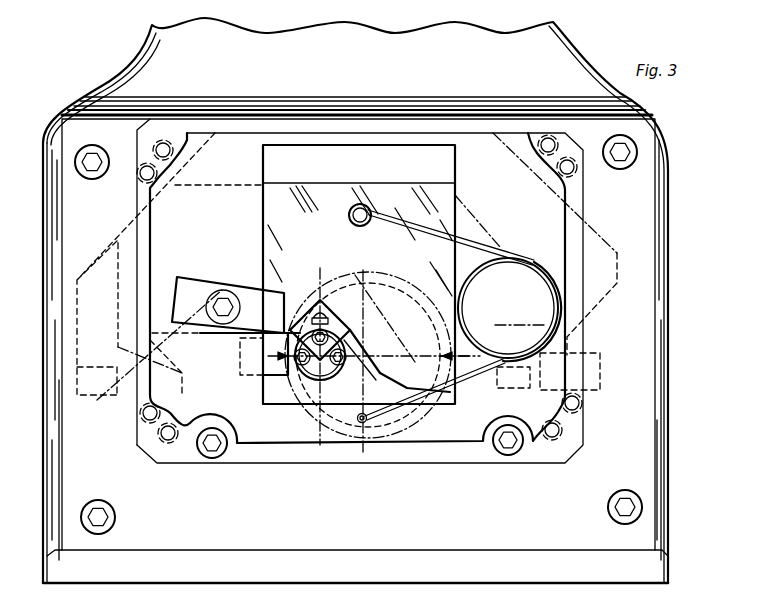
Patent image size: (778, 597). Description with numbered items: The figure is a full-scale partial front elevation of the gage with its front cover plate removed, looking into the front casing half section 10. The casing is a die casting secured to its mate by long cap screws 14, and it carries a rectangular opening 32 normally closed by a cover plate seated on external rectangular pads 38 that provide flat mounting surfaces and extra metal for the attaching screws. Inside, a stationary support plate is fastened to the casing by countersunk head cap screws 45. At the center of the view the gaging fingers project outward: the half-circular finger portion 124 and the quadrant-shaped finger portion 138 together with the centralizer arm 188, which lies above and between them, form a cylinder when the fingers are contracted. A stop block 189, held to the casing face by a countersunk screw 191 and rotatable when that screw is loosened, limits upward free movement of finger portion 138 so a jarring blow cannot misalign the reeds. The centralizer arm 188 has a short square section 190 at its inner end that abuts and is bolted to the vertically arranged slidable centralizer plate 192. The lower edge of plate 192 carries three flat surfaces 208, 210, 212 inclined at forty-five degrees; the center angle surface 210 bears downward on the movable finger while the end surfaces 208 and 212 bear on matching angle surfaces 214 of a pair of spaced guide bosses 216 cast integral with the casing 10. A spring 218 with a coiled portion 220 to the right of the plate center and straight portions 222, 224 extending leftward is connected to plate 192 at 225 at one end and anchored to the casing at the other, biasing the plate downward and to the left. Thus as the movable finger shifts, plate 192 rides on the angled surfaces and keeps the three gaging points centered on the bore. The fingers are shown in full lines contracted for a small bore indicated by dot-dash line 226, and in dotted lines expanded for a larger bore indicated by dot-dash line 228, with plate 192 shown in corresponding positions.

The front casing half section 10 is at (668, 214).
The cap screws 14 is at (84, 177).
The rectangular opening 32 is at (453, 163).
The external rectangular pads 38 is at (437, 463).
The countersunk head cap screws 45 is at (207, 460).
The exteriorly projecting finger portion 124 is at (328, 385).
The projecting finger portion 138 is at (285, 383).
The centralizer arm 188 is at (352, 324).
The stop block 189 is at (247, 284).
The short square section 190 is at (318, 300).
The countersunk screw 191 is at (230, 325).
The centralizer plate 192 is at (268, 190).
The flat angle surface 208 is at (120, 372).
The center angle surface 210 is at (366, 375).
The flat angle surface 212 is at (530, 385).
The angle surfaces 214 is at (119, 352).
The guide bosses 216 is at (101, 398).
The spring 218 is at (491, 247).
The coiled portion 220 is at (556, 249).
The straight portion 222 is at (437, 228).
The straight portion 224 is at (458, 374).
The spring connection point 225 is at (355, 209).
The small bore dot-dash line 226 is at (309, 410).
The large bore dot-dash line 228 is at (419, 405).